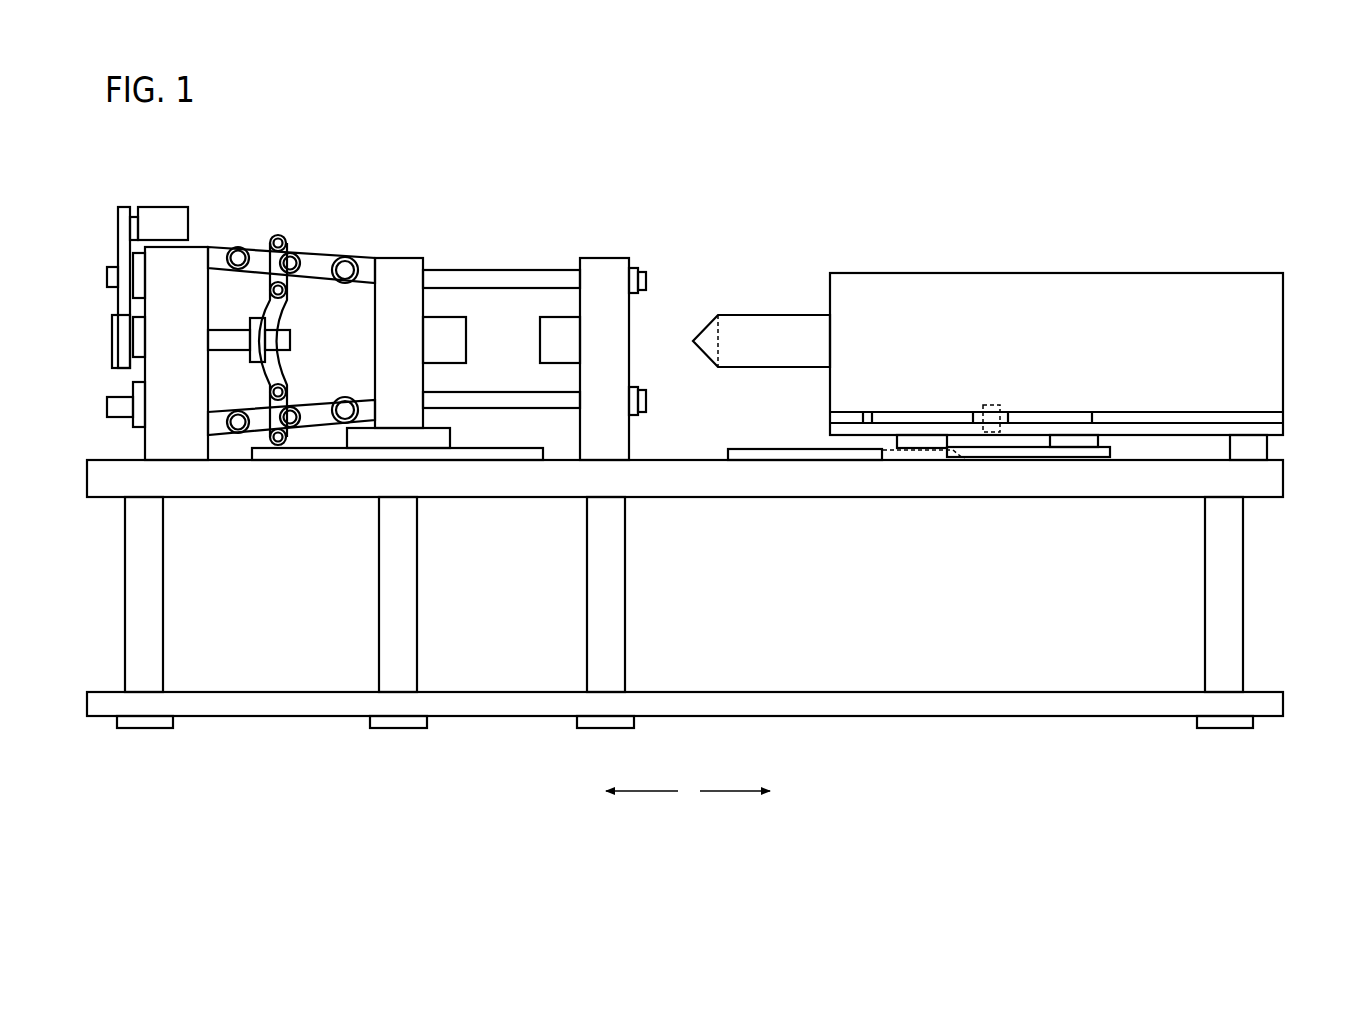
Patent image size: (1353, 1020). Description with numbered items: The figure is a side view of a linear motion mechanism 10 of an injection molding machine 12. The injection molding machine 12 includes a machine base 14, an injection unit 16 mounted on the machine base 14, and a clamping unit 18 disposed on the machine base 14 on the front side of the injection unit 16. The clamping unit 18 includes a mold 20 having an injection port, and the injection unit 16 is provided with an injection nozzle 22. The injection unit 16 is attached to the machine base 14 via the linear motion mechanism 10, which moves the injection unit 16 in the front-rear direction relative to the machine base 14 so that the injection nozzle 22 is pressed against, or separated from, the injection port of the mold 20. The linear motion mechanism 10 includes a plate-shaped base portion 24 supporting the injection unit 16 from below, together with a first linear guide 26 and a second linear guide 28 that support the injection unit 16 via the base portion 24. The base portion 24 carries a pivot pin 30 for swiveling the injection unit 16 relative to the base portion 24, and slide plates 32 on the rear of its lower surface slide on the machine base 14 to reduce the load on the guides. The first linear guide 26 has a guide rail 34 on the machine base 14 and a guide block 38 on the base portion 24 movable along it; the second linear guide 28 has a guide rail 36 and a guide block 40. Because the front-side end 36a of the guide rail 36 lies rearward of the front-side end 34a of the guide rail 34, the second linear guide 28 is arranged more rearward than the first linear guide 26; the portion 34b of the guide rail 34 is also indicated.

The linear motion mechanism 10 is at (1295, 447).
The injection molding machine 12 is at (332, 136).
The machine base 14 is at (213, 717).
The injection unit 16 is at (942, 272).
The clamping unit 18 is at (297, 214).
The mold 20 is at (444, 325).
The injection nozzle 22 is at (742, 323).
The base portion 24 is at (1193, 430).
The first linear guide 26 is at (832, 546).
The second linear guide 28 is at (1105, 546).
The pivot pin 30 is at (993, 404).
The slide plate 32 is at (1245, 445).
The guide rail 34 is at (843, 462).
The front-side end of guide rail 34a is at (728, 456).
The guide end portion 34b is at (960, 458).
The guide rail 36 is at (1033, 460).
The front-side end of guide rail 36a is at (882, 455).
The guide block 38 is at (927, 447).
The guide block 40 is at (1080, 462).